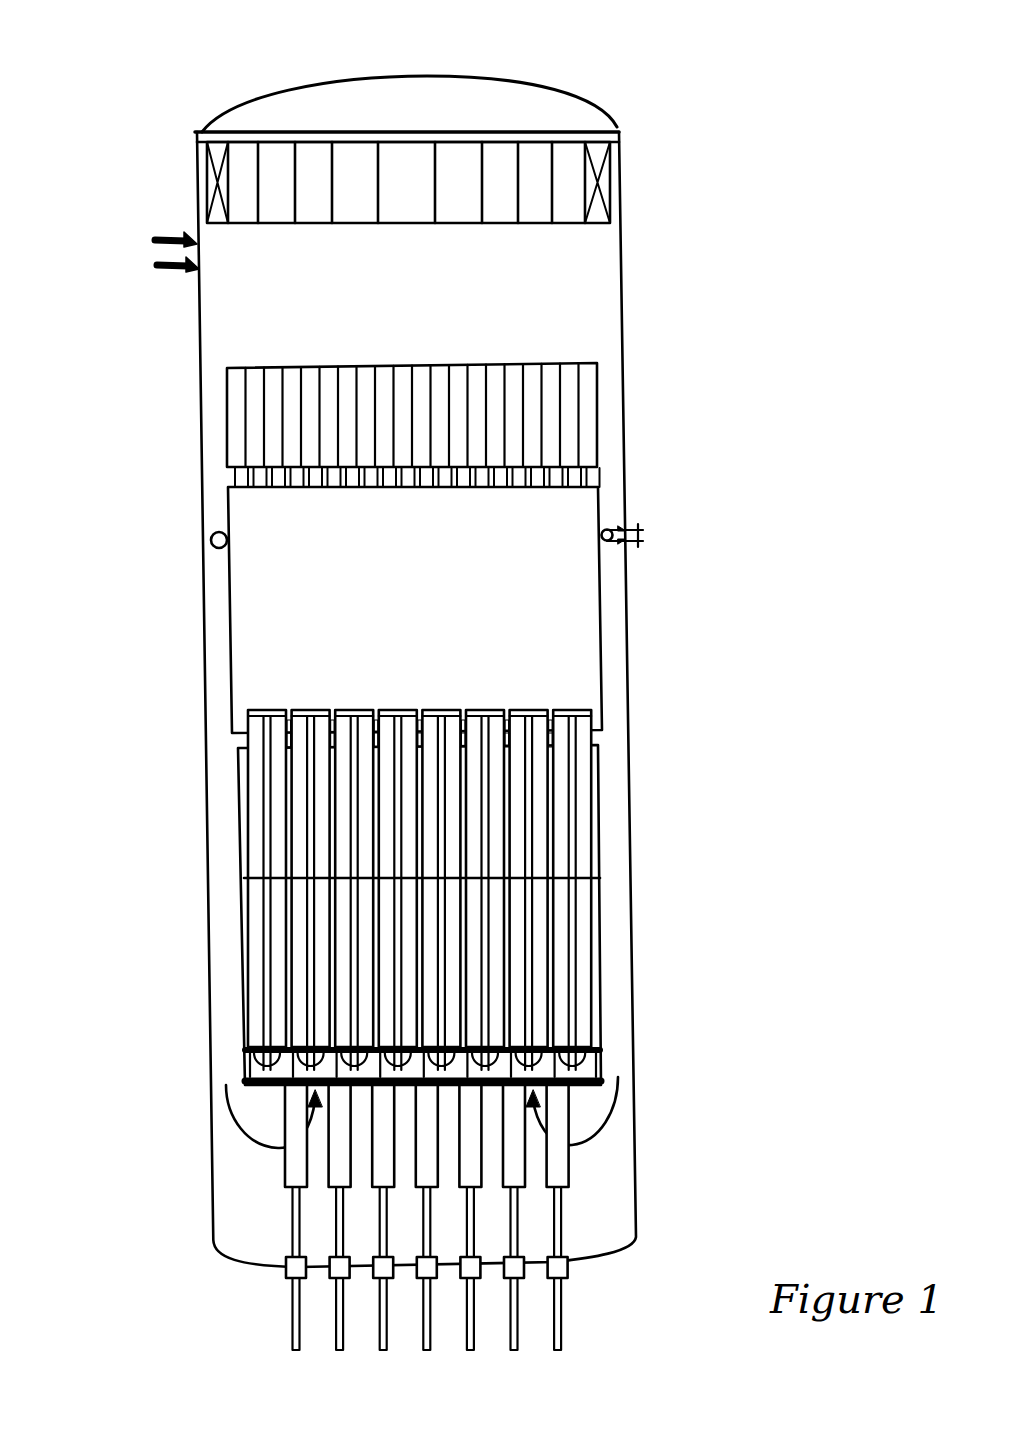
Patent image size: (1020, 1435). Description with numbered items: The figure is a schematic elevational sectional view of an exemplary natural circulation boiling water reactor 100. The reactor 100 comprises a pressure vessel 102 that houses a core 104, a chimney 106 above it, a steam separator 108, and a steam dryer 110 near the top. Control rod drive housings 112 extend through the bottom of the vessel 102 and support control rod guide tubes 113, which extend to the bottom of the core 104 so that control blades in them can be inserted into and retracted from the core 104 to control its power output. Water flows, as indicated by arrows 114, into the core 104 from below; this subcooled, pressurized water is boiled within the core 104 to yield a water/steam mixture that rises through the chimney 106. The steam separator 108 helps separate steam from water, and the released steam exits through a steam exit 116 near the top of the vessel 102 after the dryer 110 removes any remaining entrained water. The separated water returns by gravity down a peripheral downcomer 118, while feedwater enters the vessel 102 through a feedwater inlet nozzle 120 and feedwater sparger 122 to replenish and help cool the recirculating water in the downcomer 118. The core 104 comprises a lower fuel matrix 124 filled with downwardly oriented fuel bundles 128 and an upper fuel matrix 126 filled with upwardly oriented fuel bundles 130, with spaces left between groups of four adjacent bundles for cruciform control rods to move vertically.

The natural circulation boiling water reactor 100 is at (142, 84).
The pressure vessel 102 is at (622, 403).
The core 104 is at (177, 722).
The chimney 106 is at (600, 598).
The steam separator 108 is at (227, 400).
The steam dryer 110 is at (598, 224).
The control rod drive housings 112 is at (441, 1217).
The control rod guide tubes 113 is at (288, 1165).
The arrows 114 is at (250, 1143).
The steam exit 116 is at (163, 270).
The peripheral downcomer 118 is at (610, 870).
The feedwater inlet nozzle 120 is at (640, 530).
The feedwater sparger 122 is at (211, 540).
The lower fuel matrix 124 is at (590, 952).
The upper fuel matrix 126 is at (592, 795).
The downwardly oriented fuel bundles 128 is at (520, 1003).
The upwardly oriented fuel bundles 130 is at (430, 712).